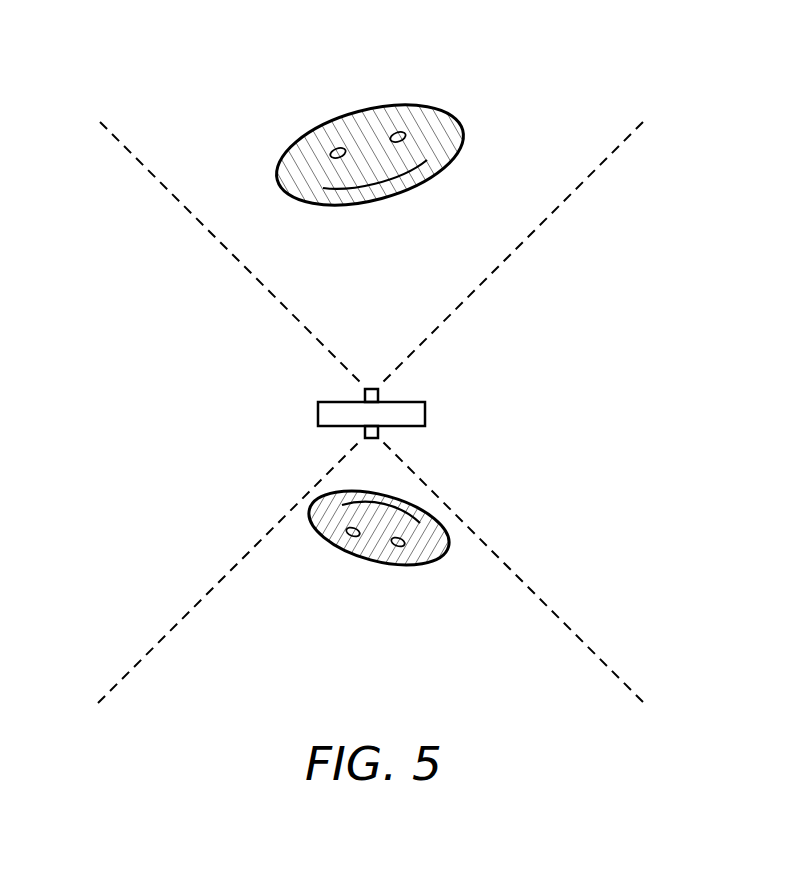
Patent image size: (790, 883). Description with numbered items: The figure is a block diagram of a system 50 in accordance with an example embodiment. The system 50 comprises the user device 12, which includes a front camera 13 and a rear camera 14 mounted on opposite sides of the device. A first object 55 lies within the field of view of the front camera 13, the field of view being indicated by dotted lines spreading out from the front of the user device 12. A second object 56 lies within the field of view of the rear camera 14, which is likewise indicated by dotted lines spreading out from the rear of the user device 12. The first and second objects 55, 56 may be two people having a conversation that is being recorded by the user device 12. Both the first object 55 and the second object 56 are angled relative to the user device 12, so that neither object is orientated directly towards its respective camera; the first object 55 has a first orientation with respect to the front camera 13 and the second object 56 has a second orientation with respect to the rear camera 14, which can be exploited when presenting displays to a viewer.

The user device 12 is at (427, 409).
The front camera 13 is at (368, 388).
The rear camera 14 is at (362, 431).
The system 50 is at (537, 687).
The first object 55 is at (370, 106).
The second object 56 is at (373, 566).